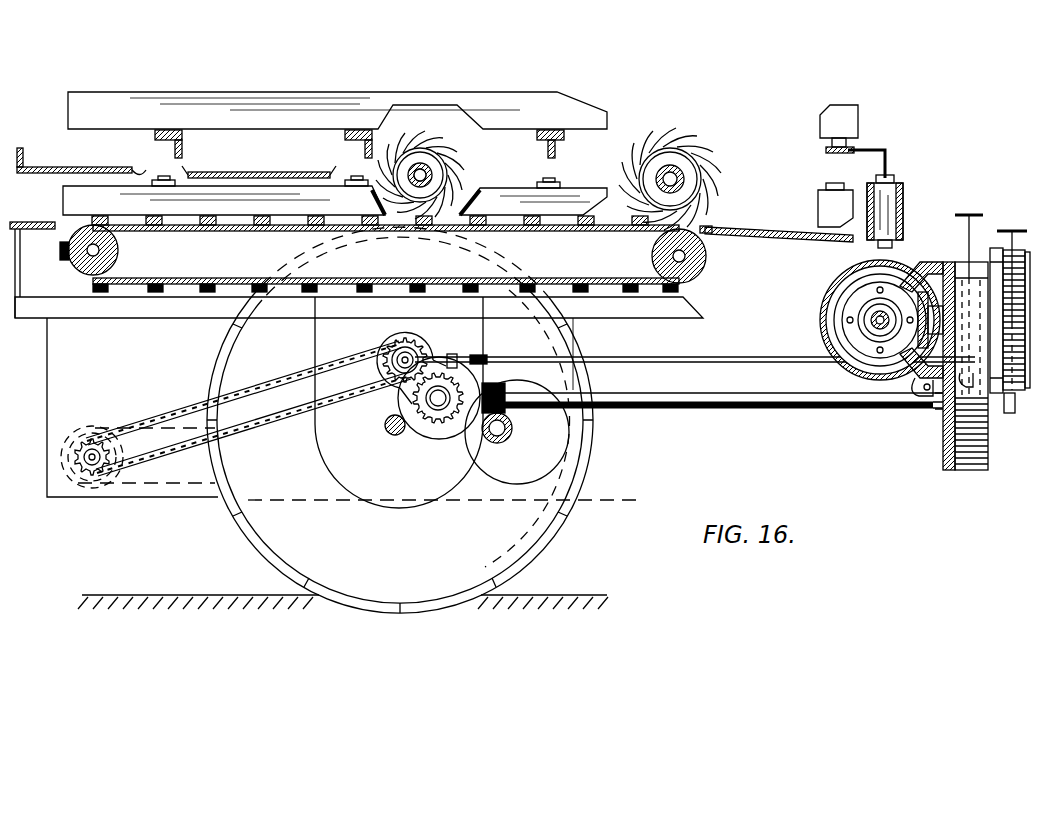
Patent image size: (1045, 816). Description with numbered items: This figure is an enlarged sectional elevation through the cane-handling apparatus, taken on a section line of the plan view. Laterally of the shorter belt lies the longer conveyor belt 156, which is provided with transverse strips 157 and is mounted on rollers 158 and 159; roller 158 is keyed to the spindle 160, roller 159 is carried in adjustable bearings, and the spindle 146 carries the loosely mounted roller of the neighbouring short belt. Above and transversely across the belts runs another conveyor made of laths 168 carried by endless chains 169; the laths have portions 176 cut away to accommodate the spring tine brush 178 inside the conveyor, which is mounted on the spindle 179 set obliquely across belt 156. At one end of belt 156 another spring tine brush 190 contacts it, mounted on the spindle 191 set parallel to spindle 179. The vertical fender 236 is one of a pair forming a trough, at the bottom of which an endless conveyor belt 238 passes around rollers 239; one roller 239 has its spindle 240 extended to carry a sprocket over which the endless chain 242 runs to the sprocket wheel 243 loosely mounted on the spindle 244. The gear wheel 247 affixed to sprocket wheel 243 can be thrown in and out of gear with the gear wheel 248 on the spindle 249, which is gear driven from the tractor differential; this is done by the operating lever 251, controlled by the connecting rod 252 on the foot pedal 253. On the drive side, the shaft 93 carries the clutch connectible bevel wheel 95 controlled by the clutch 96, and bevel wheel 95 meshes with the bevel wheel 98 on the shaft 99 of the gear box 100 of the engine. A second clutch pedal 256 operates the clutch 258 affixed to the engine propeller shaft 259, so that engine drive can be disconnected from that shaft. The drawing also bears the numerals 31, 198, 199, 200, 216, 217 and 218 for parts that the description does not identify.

The ground wheel 31 is at (260, 540).
The shaft 93 is at (867, 327).
The clutch connectible bevel wheel 95 is at (905, 283).
The clutch 96 is at (858, 303).
The bevel wheel 98 is at (907, 377).
The shaft 99 is at (1002, 315).
The gear box 100 is at (995, 250).
The spindle 146 is at (653, 257).
The conveyor belt 156 is at (510, 237).
The transverse strips 157 is at (258, 231).
The roller 158 is at (706, 258).
The roller 159 is at (120, 249).
The spindle 160 is at (88, 251).
The laths 168 is at (87, 113).
The endless chains 169 is at (187, 130).
The cut away portions 176 is at (413, 115).
The spring tine brush 178 is at (450, 150).
The spindle 179 is at (413, 187).
The spring tine brush 190 is at (682, 137).
The spindle 191 is at (682, 180).
The belt section 198 is at (757, 200).
The pipe 199 is at (838, 180).
The housing box 200 is at (847, 117).
The cylinder 216 is at (903, 198).
The cylinder shell 217 is at (905, 217).
The nozzle 218 is at (883, 245).
The vertical fender 236 is at (47, 360).
The endless conveyor belt 238 is at (173, 487).
The rollers 239 is at (113, 467).
The spindle 240 is at (90, 455).
The endless chain 242 is at (190, 408).
The sprocket wheel 243 is at (383, 347).
The spindle 244 is at (383, 387).
The gear wheel 247 is at (402, 336).
The gear wheel 248 is at (447, 412).
The spindle 249 is at (437, 400).
The operating lever 251 is at (442, 358).
The connecting rod 252 is at (720, 363).
The foot pedal 253 is at (967, 213).
The second clutch pedal 256 is at (1015, 230).
The clutch 258 is at (970, 472).
The engine propeller shaft 259 is at (935, 415).